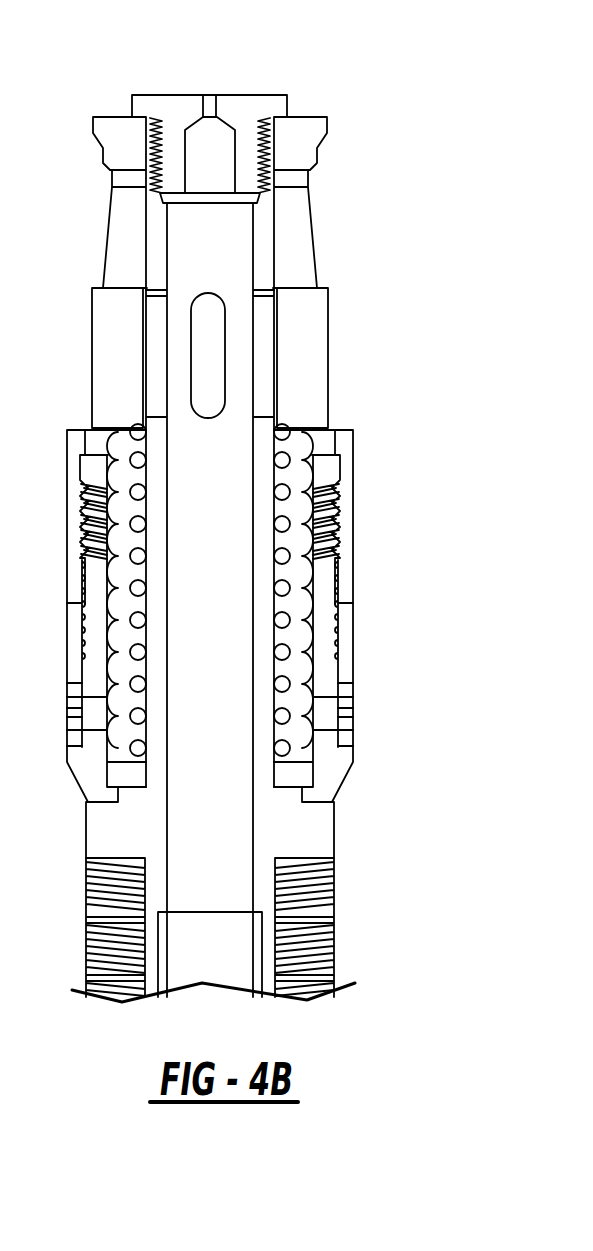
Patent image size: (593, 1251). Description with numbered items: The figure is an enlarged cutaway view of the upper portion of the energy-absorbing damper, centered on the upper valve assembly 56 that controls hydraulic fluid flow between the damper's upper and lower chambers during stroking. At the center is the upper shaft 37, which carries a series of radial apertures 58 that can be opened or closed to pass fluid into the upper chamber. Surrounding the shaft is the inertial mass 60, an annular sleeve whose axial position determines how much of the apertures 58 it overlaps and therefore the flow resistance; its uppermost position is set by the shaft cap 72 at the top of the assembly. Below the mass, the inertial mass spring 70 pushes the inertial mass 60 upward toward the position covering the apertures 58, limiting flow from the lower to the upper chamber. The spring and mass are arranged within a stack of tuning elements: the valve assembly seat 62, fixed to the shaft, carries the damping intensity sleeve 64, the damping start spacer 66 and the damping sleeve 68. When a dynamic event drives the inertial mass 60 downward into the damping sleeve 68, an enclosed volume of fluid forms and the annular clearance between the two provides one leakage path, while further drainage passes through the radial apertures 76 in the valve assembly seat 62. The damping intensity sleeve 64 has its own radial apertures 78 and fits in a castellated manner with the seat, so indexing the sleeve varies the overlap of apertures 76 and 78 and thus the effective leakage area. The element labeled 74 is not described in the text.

The upper valve assembly 56 is at (313, 85).
The shaft cap 72 is at (268, 157).
The inertial mass 60 is at (323, 290).
The radial apertures 58 is at (226, 372).
The bushing 74 is at (113, 372).
The upper shaft 37 is at (265, 452).
The inertial mass spring 70 is at (294, 495).
The damping sleeve 68 is at (354, 558).
The damping start spacer 66 is at (354, 608).
The damping intensity sleeve 64 is at (354, 683).
The radial apertures 76 is at (70, 692).
The radial apertures 78 is at (90, 725).
The valve assembly seat 62 is at (328, 775).